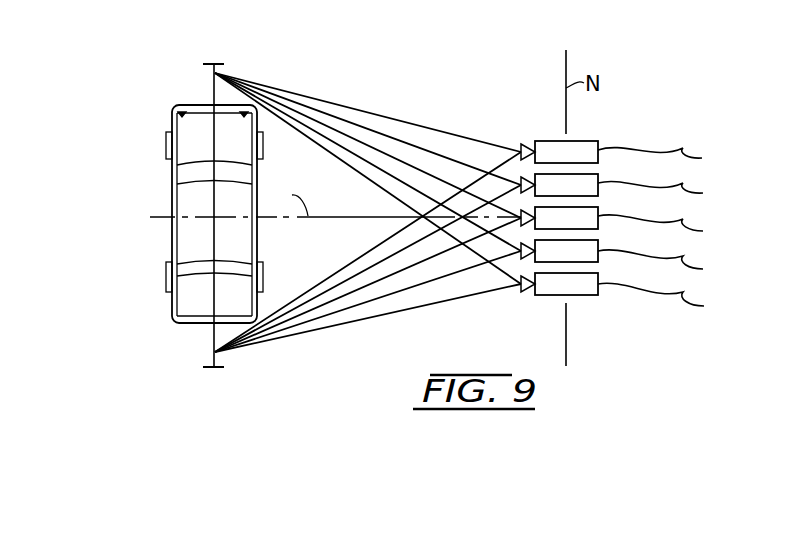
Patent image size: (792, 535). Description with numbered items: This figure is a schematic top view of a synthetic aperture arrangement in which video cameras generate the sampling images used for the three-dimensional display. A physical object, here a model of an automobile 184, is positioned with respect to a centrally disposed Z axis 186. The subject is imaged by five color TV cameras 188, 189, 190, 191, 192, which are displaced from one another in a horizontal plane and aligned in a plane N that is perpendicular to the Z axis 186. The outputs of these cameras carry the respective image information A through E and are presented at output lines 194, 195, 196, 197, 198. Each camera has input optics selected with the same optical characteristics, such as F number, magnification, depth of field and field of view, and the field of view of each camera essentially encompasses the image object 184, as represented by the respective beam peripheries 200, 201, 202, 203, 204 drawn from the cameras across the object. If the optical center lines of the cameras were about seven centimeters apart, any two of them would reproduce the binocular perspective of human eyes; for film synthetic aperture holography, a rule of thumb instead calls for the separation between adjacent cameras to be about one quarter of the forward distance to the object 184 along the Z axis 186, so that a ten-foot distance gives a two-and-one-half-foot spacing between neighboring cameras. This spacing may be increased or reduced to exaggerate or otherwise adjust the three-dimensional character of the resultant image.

The automobile model 184 is at (186, 125).
The Z axis 186 is at (354, 218).
The color TV camera 188 is at (578, 146).
The color TV camera 189 is at (598, 183).
The color TV camera 190 is at (598, 216).
The color TV camera 191 is at (598, 249).
The color TV camera 192 is at (598, 283).
The output line 194 is at (668, 156).
The output line 195 is at (669, 191).
The output line 196 is at (669, 228).
The output line 197 is at (669, 265).
The output line 198 is at (670, 300).
The beam periphery 200 is at (403, 122).
The beam periphery 201 is at (354, 122).
The beam periphery 202 is at (430, 173).
The beam periphery 203 is at (346, 156).
The beam periphery 204 is at (377, 189).